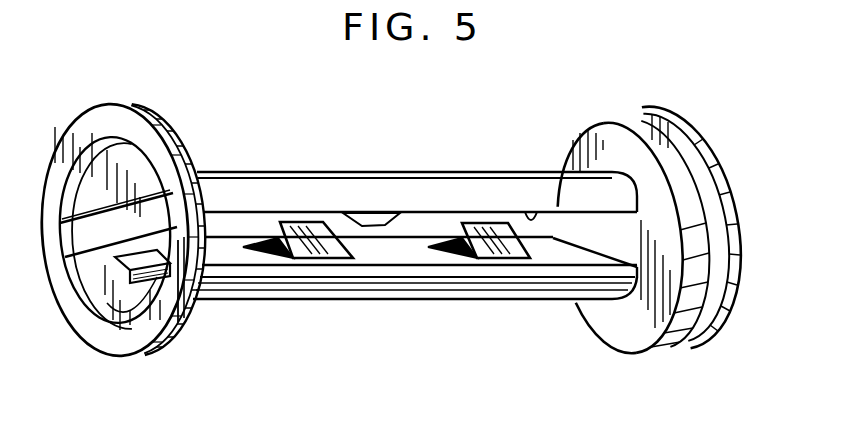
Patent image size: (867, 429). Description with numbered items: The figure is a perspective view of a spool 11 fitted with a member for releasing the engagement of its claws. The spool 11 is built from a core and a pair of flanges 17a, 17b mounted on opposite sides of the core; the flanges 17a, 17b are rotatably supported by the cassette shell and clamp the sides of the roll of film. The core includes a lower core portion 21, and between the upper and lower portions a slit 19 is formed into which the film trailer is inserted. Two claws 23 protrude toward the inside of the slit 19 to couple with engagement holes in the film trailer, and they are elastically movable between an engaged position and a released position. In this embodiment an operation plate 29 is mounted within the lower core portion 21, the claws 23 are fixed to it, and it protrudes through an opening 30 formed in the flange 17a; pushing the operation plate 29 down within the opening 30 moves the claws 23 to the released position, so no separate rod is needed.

The spool 11 is at (717, 325).
The flange 17a is at (183, 165).
The flange 17b is at (680, 172).
The slit 19 is at (530, 218).
The lower core portion 21 is at (410, 283).
The claws 23 is at (305, 227).
The operation plate 29 is at (170, 257).
The opening 30 is at (170, 323).